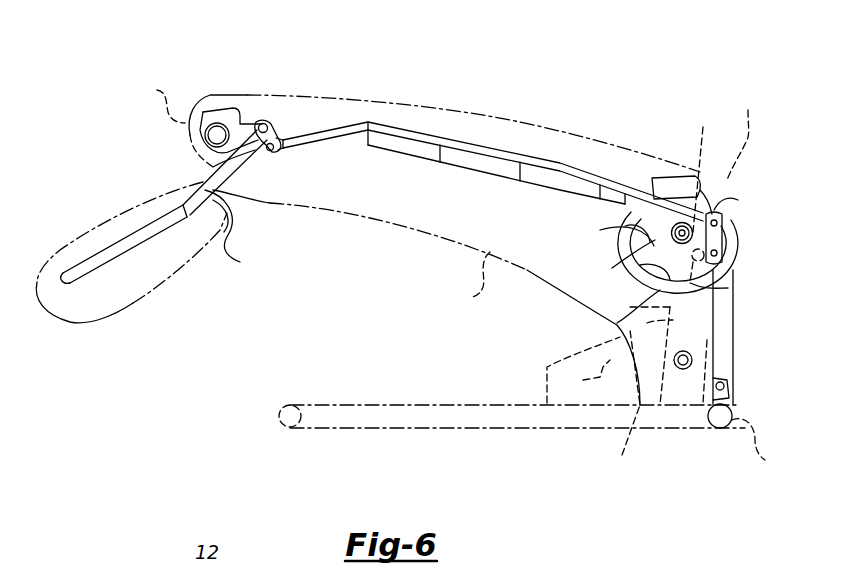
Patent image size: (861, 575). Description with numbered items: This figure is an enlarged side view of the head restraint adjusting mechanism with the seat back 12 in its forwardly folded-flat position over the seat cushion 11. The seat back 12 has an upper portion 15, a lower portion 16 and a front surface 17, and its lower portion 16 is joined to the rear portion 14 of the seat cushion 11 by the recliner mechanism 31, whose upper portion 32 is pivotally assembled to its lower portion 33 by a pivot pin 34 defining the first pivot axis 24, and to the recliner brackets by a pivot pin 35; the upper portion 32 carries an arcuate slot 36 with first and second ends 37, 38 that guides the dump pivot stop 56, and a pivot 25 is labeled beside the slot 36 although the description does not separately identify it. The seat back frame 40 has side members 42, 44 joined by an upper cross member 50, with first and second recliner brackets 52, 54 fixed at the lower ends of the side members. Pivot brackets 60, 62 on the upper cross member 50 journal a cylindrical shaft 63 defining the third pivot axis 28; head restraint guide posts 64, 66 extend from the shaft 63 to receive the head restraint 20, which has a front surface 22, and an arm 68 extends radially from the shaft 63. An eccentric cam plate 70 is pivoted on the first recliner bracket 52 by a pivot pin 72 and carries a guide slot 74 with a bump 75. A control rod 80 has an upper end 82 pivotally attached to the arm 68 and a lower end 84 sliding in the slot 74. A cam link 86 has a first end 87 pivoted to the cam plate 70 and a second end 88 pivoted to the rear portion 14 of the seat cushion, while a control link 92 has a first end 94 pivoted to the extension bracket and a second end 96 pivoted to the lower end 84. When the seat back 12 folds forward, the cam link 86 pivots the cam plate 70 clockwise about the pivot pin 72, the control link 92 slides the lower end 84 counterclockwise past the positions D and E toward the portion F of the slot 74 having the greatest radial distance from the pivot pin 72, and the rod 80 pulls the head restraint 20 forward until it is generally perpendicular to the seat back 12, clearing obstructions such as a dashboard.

The seat cushion assembly 11 is at (332, 430).
The seat back 12 is at (510, 88).
The rear portion of seat cushion 14 is at (760, 444).
The upper portion of seat back 15 is at (157, 100).
The lower portion of seat back 16 is at (743, 133).
The front surface of seat back 17 is at (468, 282).
The head restraint 20 is at (123, 264).
The front surface of head restraint 22 is at (82, 230).
The first pivot axis 24 is at (685, 415).
The pivot pin 34 is at (683, 370).
The pivot 25 is at (615, 302).
The arcuate slot 36 is at (612, 268).
The third pivot axis 28 is at (264, 94).
The cylindrical shaft 63 is at (265, 122).
The recliner mechanism 31 is at (565, 356).
The lower portion of recliner mechanism 33 is at (554, 353).
The upper portion of recliner mechanism 32 is at (586, 376).
The pivot pin 35 is at (547, 383).
The first end of arcuate slot 37 is at (625, 404).
The second end of arcuate slot 38 is at (703, 192).
The seat back frame 40 is at (485, 167).
The side member 42 is at (485, 167).
The side member 44 is at (440, 170).
The upper cross member 50 is at (214, 108).
The first recliner bracket 52 is at (656, 140).
The second recliner bracket 54 is at (632, 178).
The dump pivot stop 56 is at (724, 238).
The pivot bracket 60 is at (179, 172).
The pivot bracket 62 is at (193, 160).
The head restraint guide post 64 is at (250, 232).
The head restraint guide post 66 is at (240, 262).
The arm 68 is at (285, 138).
The eccentric cam plate 70 is at (693, 184).
The pivot pin 72 is at (653, 287).
The guide slot 74 is at (617, 323).
The bump 75 is at (625, 226).
The control rod 80 is at (493, 127).
The upper end of rod 82 is at (440, 130).
The lower end of rod 84 is at (710, 212).
The cam link 86 is at (737, 333).
The first end of cam link 87 is at (728, 288).
The second end of cam link 88 is at (729, 388).
The control link 92 is at (724, 223).
The first end of control link 94 is at (724, 254).
The second end of control link 96 is at (730, 204).
The first position D is at (617, 255).
The second position E is at (640, 206).
The portion of slot F is at (735, 273).